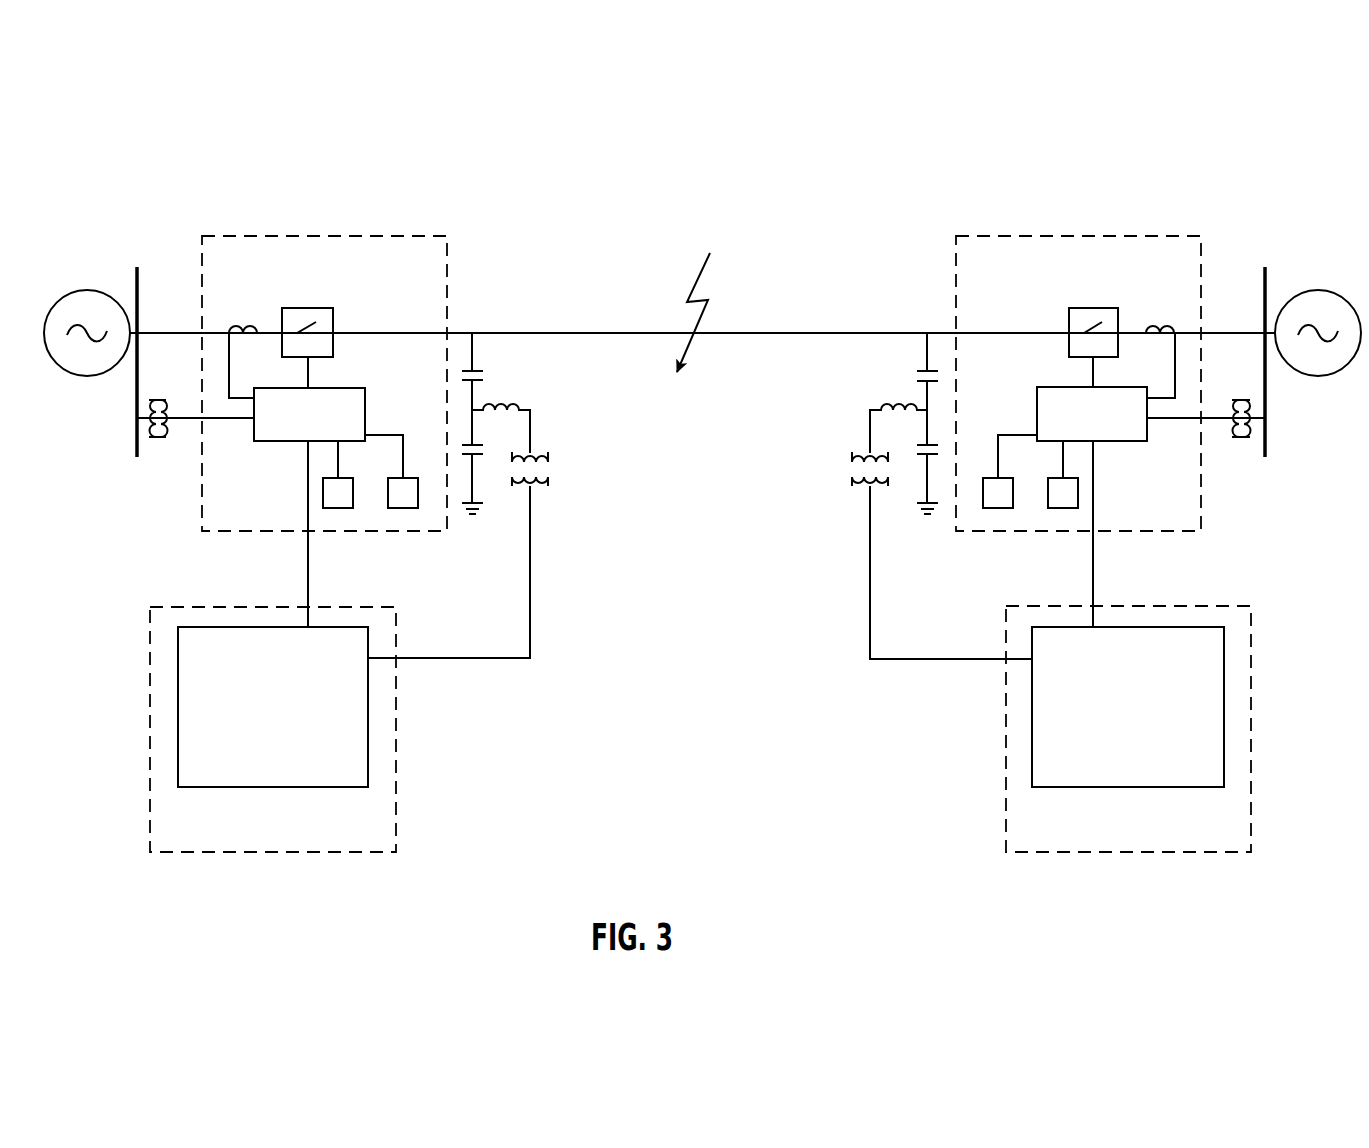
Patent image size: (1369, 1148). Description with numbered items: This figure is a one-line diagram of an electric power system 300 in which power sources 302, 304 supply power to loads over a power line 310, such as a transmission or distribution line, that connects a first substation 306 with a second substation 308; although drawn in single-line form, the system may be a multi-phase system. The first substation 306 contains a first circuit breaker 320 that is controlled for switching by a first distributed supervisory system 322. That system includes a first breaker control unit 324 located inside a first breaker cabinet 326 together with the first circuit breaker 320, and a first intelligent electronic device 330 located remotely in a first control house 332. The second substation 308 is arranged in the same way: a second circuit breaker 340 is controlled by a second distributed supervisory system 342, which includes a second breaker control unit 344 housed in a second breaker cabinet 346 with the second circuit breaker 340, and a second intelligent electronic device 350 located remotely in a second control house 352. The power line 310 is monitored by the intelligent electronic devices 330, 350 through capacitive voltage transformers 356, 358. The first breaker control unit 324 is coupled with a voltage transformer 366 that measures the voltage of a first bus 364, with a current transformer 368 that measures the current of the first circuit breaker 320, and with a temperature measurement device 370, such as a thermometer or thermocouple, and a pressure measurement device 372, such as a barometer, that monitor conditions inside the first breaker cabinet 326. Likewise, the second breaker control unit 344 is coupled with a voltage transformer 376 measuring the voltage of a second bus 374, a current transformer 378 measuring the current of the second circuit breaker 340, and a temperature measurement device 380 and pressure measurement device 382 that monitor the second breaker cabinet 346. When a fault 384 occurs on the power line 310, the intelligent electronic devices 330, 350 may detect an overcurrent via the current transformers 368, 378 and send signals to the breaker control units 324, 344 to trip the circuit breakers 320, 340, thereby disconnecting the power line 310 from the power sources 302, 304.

The electric power system 300 is at (1078, 95).
The power source 302 is at (70, 375).
The power source 304 is at (1332, 377).
The first substation 306 is at (156, 226).
The second substation 308 is at (1254, 223).
The power line 310 is at (723, 333).
The first circuit breaker 320 is at (313, 308).
The first distributed supervisory system 322 is at (268, 468).
The first breaker control unit 324 is at (366, 408).
The first breaker cabinet 326 is at (334, 236).
The first intelligent electronic device 330 is at (218, 788).
The first control house 332 is at (150, 780).
The second circuit breaker 340 is at (1092, 308).
The second distributed supervisory system 342 is at (1132, 469).
The second breaker control unit 344 is at (1036, 408).
The second breaker cabinet 346 is at (1066, 236).
The second intelligent electronic device 350 is at (1180, 788).
The second control house 352 is at (1251, 780).
The capacitive voltage transformer 356 is at (566, 509).
The capacitive voltage transformer 358 is at (850, 513).
The first bus 364 is at (136, 282).
The voltage transformer 366 is at (167, 438).
The current transformer 368 is at (243, 327).
The temperature measurement device 370 is at (338, 508).
The pressure measurement device 372 is at (403, 508).
The second bus 374 is at (1266, 280).
The voltage transformer 376 is at (1232, 438).
The current transformer 378 is at (1160, 327).
The temperature measurement device 380 is at (988, 508).
The pressure measurement device 382 is at (1063, 508).
The fault 384 is at (707, 262).